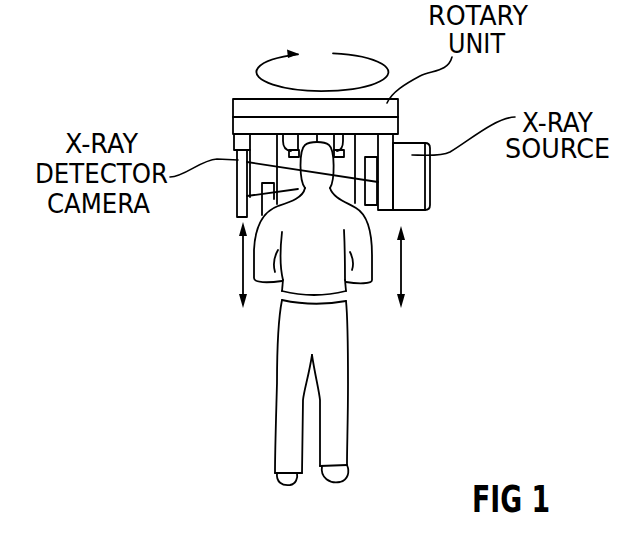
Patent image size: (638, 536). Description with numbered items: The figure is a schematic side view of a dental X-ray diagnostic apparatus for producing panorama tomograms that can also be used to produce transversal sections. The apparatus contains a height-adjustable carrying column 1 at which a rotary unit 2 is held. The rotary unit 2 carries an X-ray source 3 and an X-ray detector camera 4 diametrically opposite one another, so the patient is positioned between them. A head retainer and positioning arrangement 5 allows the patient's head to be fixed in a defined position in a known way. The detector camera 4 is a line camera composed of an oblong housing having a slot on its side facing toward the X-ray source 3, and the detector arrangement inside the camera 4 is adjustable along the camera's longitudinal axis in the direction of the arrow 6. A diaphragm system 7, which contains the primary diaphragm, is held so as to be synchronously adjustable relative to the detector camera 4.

The height-adjustable carrying column 1 is at (313, 450).
The rotary unit 2 is at (398, 120).
The X-ray source 3 is at (413, 180).
The X-ray detector camera 4 is at (238, 180).
The head retainer and positioning arrangement 5 is at (291, 150).
The arrow 6 is at (240, 267).
The diaphragm system 7 is at (378, 181).